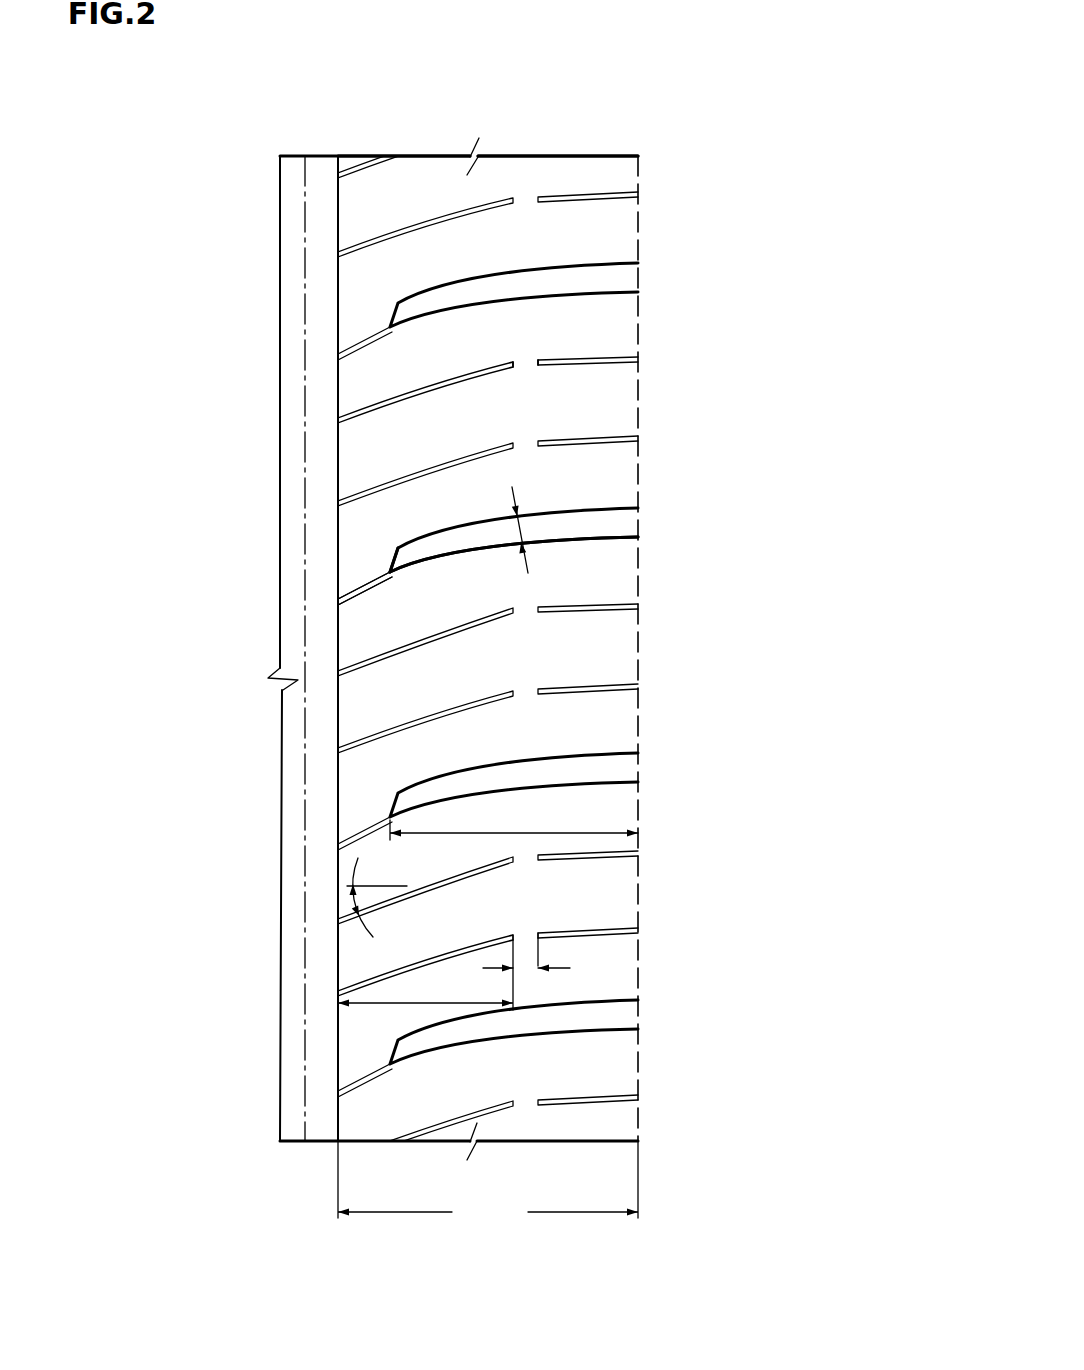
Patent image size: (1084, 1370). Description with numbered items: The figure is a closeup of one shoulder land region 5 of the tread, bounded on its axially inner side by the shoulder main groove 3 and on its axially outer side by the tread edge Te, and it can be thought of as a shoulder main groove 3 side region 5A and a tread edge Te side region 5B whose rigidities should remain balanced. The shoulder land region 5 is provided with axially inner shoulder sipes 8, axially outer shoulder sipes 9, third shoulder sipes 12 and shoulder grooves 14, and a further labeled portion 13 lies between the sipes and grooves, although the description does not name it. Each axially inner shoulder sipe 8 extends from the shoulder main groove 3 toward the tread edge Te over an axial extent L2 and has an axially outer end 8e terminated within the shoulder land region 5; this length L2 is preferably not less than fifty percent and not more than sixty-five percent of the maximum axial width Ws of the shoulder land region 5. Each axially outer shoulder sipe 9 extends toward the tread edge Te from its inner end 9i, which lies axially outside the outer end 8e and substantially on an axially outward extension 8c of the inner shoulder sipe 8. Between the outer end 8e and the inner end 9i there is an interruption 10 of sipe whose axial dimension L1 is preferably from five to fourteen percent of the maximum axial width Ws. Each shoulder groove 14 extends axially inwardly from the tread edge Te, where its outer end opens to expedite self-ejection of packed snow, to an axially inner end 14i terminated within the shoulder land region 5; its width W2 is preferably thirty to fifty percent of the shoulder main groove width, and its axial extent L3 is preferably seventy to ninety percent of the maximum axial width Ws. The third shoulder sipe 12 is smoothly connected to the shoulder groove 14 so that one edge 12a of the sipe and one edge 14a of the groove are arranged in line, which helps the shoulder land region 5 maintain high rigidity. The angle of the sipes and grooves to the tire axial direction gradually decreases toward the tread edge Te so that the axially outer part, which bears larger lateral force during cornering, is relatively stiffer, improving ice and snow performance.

The shoulder main groove 3 is at (319, 188).
The shoulder land region 5 is at (557, 88).
The shoulder main groove side region 5A is at (380, 150).
The tread edge side region 5B is at (585, 150).
The tread edge Te is at (638, 183).
The axially inner shoulder sipe 8 is at (366, 410).
The axially outward extension of the axially inner shoulder sipe 8c is at (600, 311).
The axially outer end of the axially inner shoulder sipe 8e is at (517, 372).
The axially outer shoulder sipe 9 is at (603, 360).
The inner end of the axially outer shoulder sipe 9i is at (541, 375).
The interruption 10 is at (522, 352).
The third shoulder sipe 12 is at (375, 622).
The edge of the third shoulder sipe 12a is at (368, 588).
The block 13 is at (366, 584).
The shoulder groove 14 is at (560, 518).
The axially inner end of the shoulder groove 14i is at (394, 562).
The edge of the shoulder groove 14a is at (602, 538).
The width of the shoulder groove W2 is at (527, 530).
The axial dimension of the interruption L1 is at (530, 975).
The axial extent of the axially inner shoulder sipe L2 is at (395, 1008).
The axial extent of the shoulder groove L3 is at (545, 832).
The maximum axial width of the shoulder land region Ws is at (488, 1184).